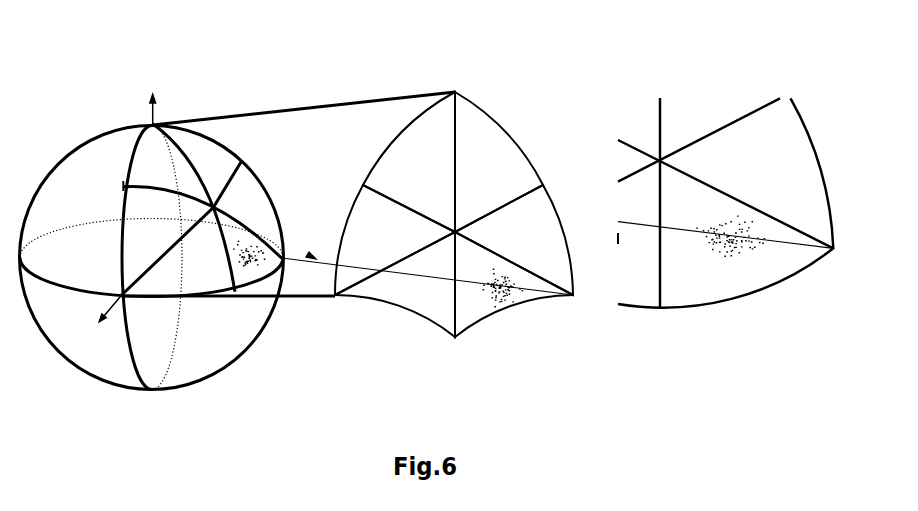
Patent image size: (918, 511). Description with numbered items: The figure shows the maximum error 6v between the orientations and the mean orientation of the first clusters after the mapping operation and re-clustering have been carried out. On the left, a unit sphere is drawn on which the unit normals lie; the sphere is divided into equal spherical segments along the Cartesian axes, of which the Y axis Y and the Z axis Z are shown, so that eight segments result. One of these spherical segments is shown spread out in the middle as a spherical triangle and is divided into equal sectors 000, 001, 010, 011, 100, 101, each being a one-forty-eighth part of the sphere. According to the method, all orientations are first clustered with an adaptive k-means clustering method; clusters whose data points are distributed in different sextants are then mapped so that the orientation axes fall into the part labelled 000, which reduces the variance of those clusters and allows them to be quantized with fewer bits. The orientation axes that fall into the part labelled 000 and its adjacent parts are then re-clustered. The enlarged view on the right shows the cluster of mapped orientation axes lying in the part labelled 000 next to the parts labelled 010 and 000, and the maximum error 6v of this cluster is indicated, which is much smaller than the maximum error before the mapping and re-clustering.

The maximum error 6v is at (750, 258).
The sector 000 is at (600, 281).
The sector 001 is at (409, 162).
The sector 010 is at (616, 220).
The sector 011 is at (499, 162).
The sector 100 is at (395, 284).
The sector 101 is at (395, 240).
The Cartesian Y axis Y is at (161, 109).
The Cartesian Z axis Z is at (103, 308).